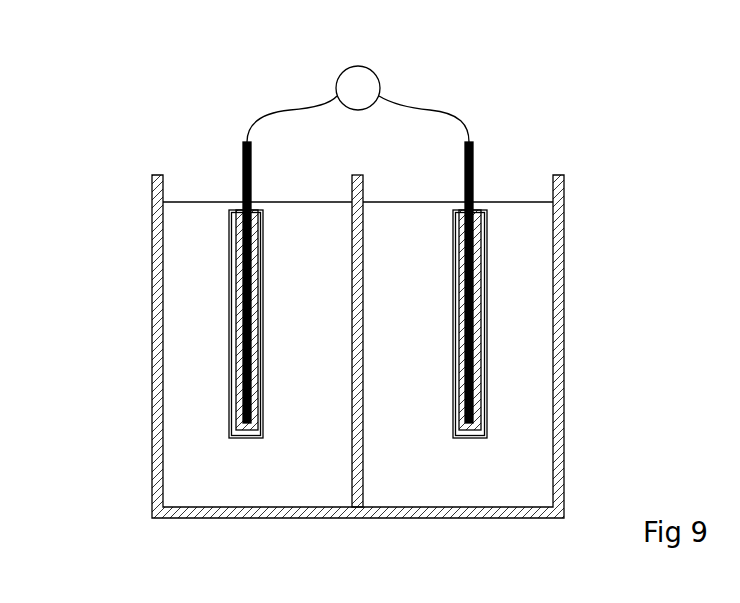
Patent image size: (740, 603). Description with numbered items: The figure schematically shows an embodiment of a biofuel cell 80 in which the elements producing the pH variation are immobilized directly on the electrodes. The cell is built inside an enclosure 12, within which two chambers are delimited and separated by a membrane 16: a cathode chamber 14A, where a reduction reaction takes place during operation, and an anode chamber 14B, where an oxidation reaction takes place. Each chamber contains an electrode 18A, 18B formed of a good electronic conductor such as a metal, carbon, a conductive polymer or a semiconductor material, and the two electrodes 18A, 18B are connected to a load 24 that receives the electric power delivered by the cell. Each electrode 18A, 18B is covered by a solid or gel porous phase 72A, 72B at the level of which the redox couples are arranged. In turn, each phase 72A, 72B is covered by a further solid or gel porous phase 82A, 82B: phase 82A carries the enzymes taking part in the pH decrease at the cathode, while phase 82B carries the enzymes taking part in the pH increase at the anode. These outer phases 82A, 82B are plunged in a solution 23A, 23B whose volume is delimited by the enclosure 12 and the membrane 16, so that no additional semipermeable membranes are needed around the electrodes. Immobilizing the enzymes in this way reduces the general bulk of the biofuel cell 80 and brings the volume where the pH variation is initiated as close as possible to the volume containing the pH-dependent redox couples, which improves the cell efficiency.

The biofuel cell 80 is at (106, 71).
The enclosure 12 is at (565, 203).
The membrane 16 is at (363, 495).
The cathode chamber 14A is at (252, 490).
The anode chamber 14B is at (473, 490).
The solution 23A is at (185, 415).
The solution 23B is at (528, 418).
The electrode 18A is at (243, 148).
The electrode 18B is at (473, 148).
The solid or gel porous phase 72A is at (235, 252).
The solid or gel porous phase 72B is at (486, 247).
The solid or gel porous phase 82A is at (230, 333).
The solid or gel porous phase 82B is at (486, 297).
The load 24 is at (378, 75).